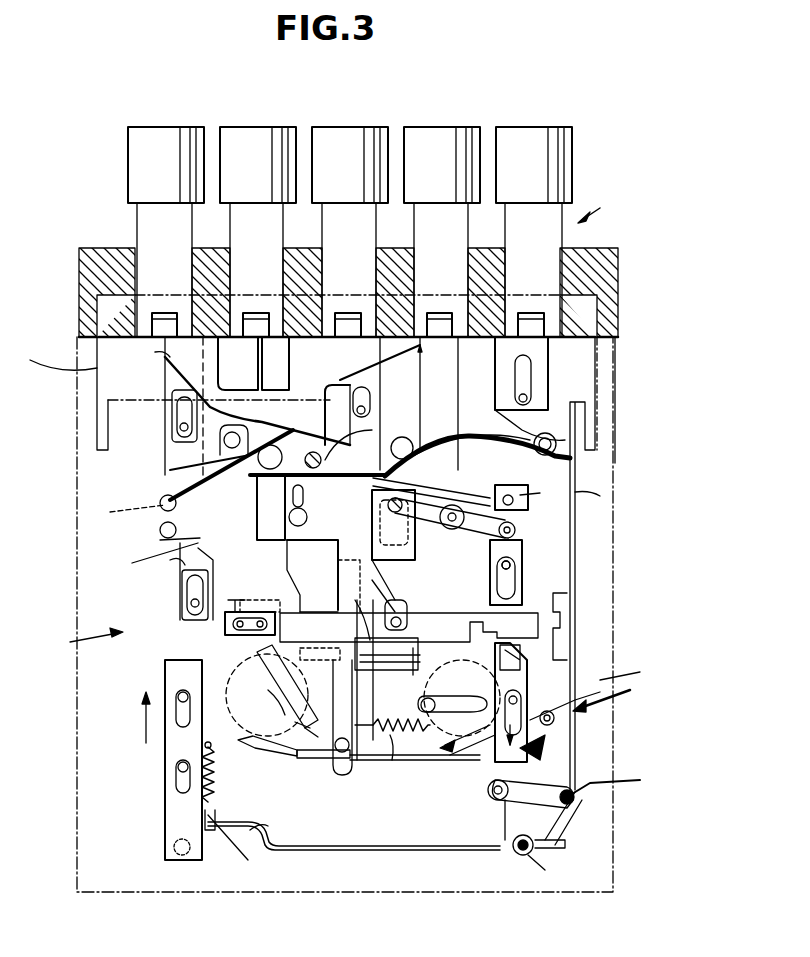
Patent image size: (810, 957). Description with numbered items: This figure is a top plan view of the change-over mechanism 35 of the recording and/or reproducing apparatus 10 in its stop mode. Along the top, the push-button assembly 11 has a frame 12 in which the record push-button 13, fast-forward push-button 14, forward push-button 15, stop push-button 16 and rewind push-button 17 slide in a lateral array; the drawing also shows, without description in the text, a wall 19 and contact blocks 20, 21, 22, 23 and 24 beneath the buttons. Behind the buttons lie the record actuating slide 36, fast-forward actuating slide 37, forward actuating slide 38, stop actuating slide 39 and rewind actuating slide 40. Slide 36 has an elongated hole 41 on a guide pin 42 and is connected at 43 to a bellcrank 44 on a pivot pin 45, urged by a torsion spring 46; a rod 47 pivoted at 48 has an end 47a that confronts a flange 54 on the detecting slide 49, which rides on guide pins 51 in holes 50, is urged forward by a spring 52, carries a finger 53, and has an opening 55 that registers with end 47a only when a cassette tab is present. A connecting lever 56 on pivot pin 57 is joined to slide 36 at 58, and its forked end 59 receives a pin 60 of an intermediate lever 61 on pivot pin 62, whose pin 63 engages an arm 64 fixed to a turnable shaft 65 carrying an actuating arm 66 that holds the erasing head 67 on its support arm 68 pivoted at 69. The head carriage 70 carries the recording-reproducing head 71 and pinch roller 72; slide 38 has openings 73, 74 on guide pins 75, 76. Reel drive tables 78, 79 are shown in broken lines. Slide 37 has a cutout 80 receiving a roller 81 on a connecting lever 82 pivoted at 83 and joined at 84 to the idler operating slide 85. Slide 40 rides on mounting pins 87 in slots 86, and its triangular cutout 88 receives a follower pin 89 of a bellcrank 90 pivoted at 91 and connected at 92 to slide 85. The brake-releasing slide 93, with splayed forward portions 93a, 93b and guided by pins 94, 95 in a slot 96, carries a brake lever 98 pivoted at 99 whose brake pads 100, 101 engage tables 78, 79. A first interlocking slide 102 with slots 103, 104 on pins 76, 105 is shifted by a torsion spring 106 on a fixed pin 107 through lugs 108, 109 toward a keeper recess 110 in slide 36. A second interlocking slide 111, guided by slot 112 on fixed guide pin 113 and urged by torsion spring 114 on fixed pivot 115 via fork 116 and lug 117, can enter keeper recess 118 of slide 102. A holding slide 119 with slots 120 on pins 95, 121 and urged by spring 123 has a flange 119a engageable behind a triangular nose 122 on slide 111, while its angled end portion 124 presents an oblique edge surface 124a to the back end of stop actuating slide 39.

The recording and/or reproducing apparatus 10 is at (632, 589).
The push-button assembly 11 is at (602, 211).
The frame 12 is at (612, 270).
The record push-button 13 is at (537, 130).
The fast-forward push-button 14 is at (445, 130).
The forward push-button 15 is at (353, 130).
The stop push-button 16 is at (263, 130).
The rewind push-button 17 is at (165, 130).
The wall 19 is at (63, 362).
The contact block 20 is at (528, 316).
The contact block 21 is at (437, 316).
The contact block 22 is at (345, 316).
The contact block 23 is at (254, 316).
The contact block 24 is at (162, 316).
The change-over mechanism 35 is at (81, 642).
The record actuating slide 36 is at (600, 496).
The fast-forward actuating slide 37 is at (450, 372).
The forward actuating slide 38 is at (372, 373).
The stop actuating slide 39 is at (285, 363).
The rewind actuating slide 40 is at (165, 382).
The longitudinally elongated hole 41 is at (530, 372).
The guide pin 42 is at (512, 400).
The pivotal connection 43 is at (597, 809).
The bellcrank 44 is at (570, 808).
The pivot pin 45 is at (490, 797).
The torsion spring 46 is at (512, 848).
The rod 47 is at (342, 852).
The end of rod 47a is at (275, 817).
The pivotal connection 48 is at (542, 872).
The detecting slide 49 is at (168, 758).
The longitudinally elongated holes 50 is at (176, 700).
The guide pins 51 is at (180, 695).
The spring 52 is at (214, 782).
The finger 53 is at (165, 855).
The flange 54 is at (211, 835).
The opening 55 is at (241, 849).
The connecting lever 56 is at (548, 418).
The pivot pin 57 is at (402, 437).
The pivotal connection 58 is at (570, 458).
The forked end 59 is at (348, 440).
The pin 60 is at (311, 450).
The intermediate lever 61 is at (278, 446).
The pivot pin 62 is at (300, 420).
The pin 63 is at (280, 507).
The arm 64 is at (178, 468).
The turnable shaft 65 is at (160, 500).
The actuating arm 66 is at (126, 505).
The erasing head 67 is at (216, 581).
The support arm 68 is at (164, 542).
The pivot 69 is at (160, 525).
The head carriage 70 is at (500, 537).
The recording-reproducing head 71 is at (319, 578).
The pinch roller 72 is at (423, 560).
The longitudinally elongated opening 73 is at (370, 392).
The longitudinally elongated opening 74 is at (398, 582).
The guide pin 75 is at (317, 455).
The guide pin 76 is at (406, 608).
The reel drive table 78 is at (228, 690).
The reel drive table 79 is at (518, 685).
The longitudinally elongated cutout 80 is at (379, 527).
The roller 81 is at (412, 482).
The connecting lever 82 is at (497, 485).
The pivot 83 is at (455, 505).
The pivotal connection 84 is at (541, 493).
The idler operating slide 85 is at (522, 547).
The slots 86 is at (178, 428).
The mounting pins 87 is at (172, 445).
The triangular cutout 88 is at (150, 559).
The follower pin 89 is at (165, 573).
The bellcrank 90 is at (242, 432).
The pivot 91 is at (235, 420).
The pivotal connection 92 is at (512, 494).
The brake-releasing slide 93 is at (386, 680).
The forward portion 93a is at (141, 352).
The forward portion 93b is at (396, 371).
The guide pin 94 is at (288, 560).
The guide pin 95 is at (317, 735).
The slot 96 is at (284, 520).
The brake lever 98 is at (336, 778).
The pivot 99 is at (344, 755).
The brake pad 100 is at (262, 755).
The brake pad 101 is at (470, 760).
The first interlocking slide 102 is at (525, 610).
The slot 103 is at (352, 610).
The slot 104 is at (228, 630).
The guide pin 105 is at (277, 686).
The torsion spring 106 is at (285, 628).
The fixed pin 107 is at (332, 586).
The apertured lug 108 is at (390, 668).
The apertured lug 109 is at (278, 600).
The keeper recess 110 is at (565, 622).
The second interlocking slide 111 is at (529, 657).
The slot 112 is at (528, 745).
The fixed guide pin 113 is at (574, 696).
The torsion spring 114 is at (610, 703).
The fixed pivot 115 is at (565, 730).
The fork 116 is at (637, 679).
The apertured lug 117 is at (544, 756).
The keeper recess 118 is at (462, 612).
The holding slide 119 is at (310, 758).
The flange 119a is at (490, 683).
The longitudinal slots 120 is at (370, 765).
The guide pin 121 is at (400, 734).
The triangular nose 122 is at (469, 750).
The spring 123 is at (402, 759).
The angled end portion 124 is at (260, 702).
The oblique edge surface 124a is at (286, 721).